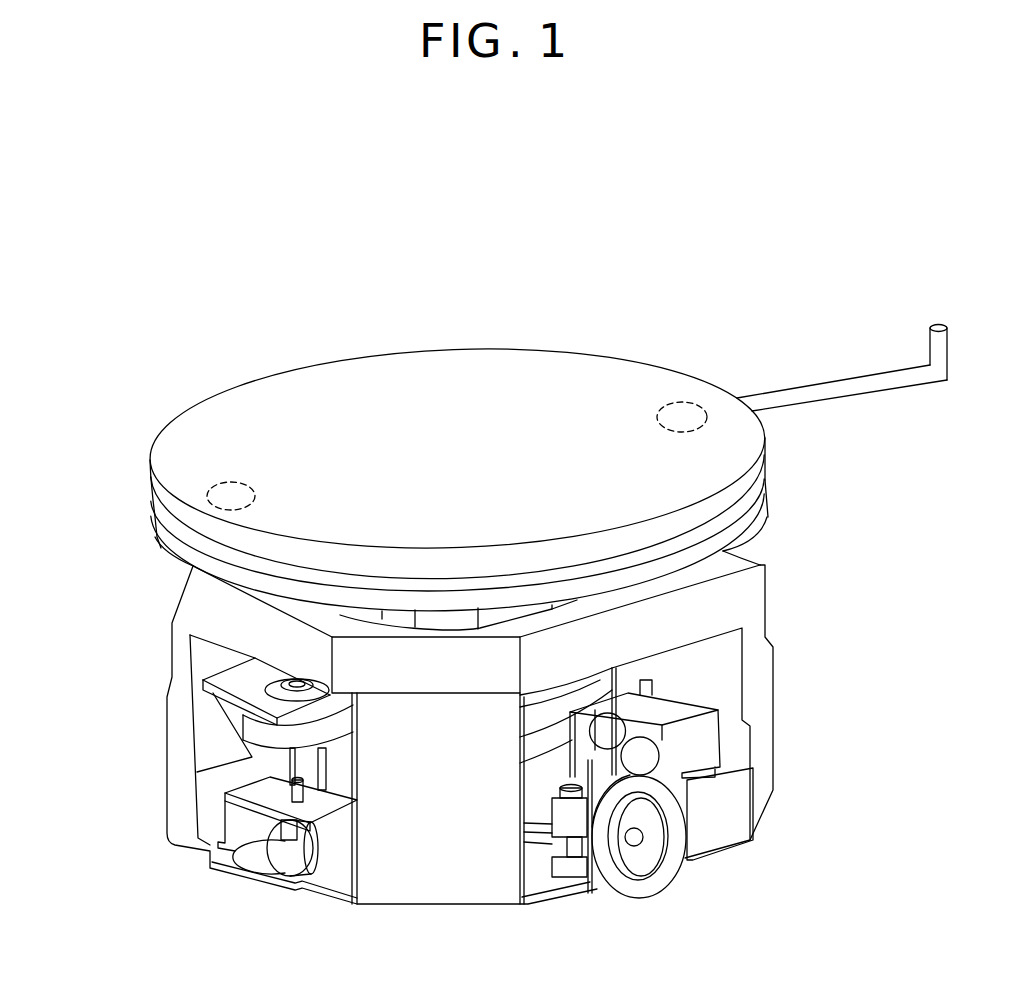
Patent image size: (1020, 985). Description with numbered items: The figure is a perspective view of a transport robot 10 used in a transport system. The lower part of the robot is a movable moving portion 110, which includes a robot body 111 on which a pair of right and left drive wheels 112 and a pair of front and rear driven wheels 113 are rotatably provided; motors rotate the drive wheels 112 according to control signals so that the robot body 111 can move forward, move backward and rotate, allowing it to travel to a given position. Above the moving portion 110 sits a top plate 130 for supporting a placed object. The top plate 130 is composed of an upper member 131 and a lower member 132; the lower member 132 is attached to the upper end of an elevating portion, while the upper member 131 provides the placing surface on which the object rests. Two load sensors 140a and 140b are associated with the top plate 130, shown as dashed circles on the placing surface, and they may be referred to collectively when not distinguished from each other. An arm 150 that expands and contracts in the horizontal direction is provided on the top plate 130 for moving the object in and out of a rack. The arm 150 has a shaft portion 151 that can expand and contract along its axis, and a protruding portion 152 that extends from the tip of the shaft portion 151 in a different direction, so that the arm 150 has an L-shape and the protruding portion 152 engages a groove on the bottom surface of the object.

The transport robot 10 is at (72, 237).
The moving portion 110 is at (112, 752).
The robot body 111 is at (173, 657).
The drive wheel 112 is at (653, 873).
The driven wheel 113 is at (285, 873).
The top plate 130 is at (112, 505).
The upper member 131 is at (263, 400).
The lower member 132 is at (163, 547).
The load sensor 140a is at (656, 420).
The load sensor 140b is at (258, 494).
The arm 150 is at (830, 331).
The shaft portion 151 is at (805, 405).
The protruding portion 152 is at (936, 325).